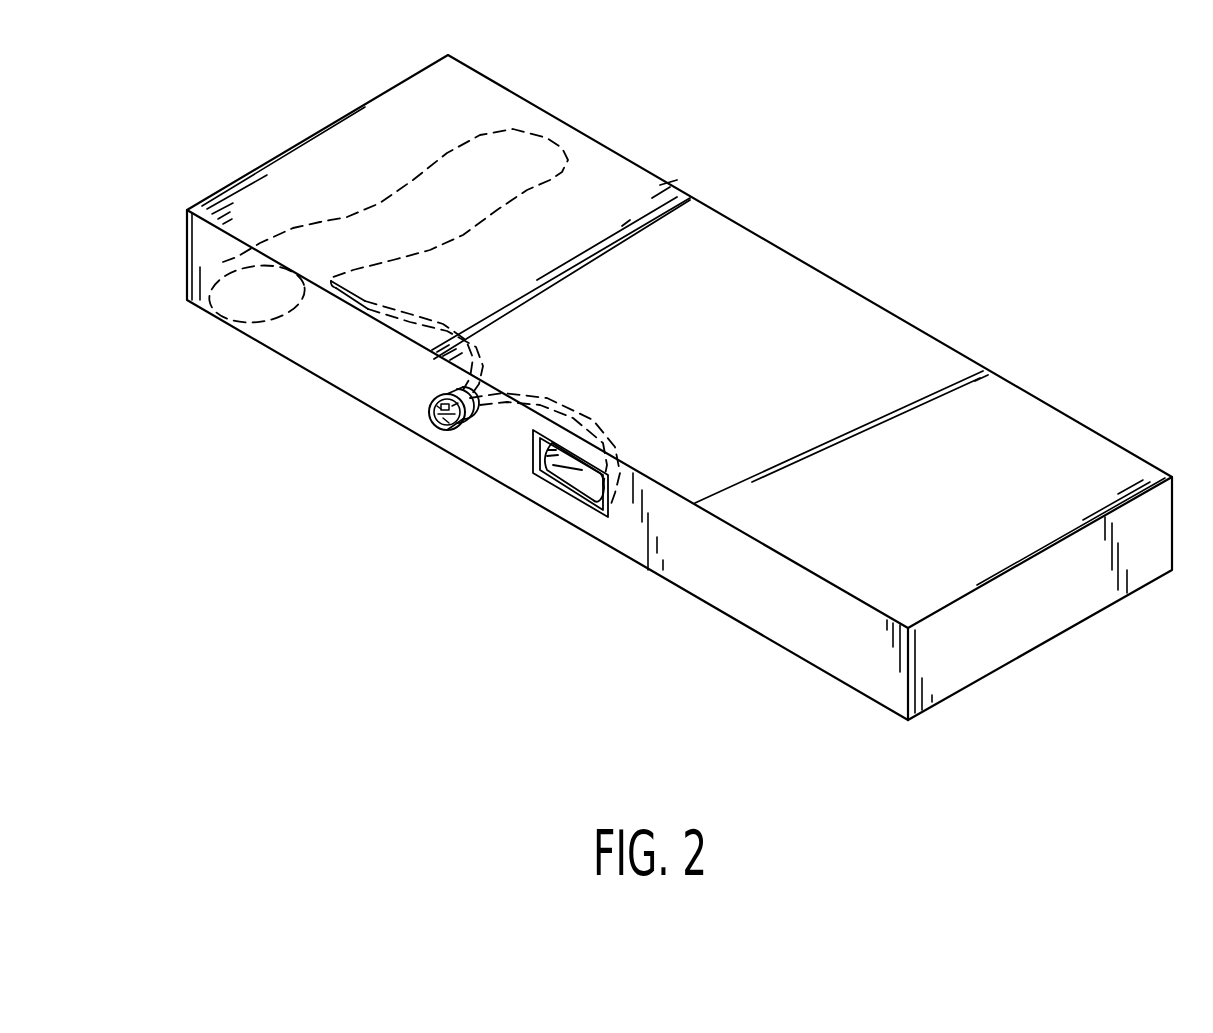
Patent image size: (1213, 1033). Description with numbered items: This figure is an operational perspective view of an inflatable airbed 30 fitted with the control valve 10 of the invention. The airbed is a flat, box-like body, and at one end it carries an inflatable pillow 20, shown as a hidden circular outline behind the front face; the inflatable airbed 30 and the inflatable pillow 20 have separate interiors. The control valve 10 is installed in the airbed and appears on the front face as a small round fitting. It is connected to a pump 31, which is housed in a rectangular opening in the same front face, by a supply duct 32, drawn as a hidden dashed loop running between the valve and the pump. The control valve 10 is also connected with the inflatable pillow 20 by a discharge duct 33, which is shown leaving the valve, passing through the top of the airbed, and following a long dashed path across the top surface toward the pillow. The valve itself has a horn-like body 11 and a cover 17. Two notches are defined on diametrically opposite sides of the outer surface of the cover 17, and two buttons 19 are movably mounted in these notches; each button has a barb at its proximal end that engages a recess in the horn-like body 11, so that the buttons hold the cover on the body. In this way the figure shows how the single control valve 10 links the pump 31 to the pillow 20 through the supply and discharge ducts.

The control valve 10 is at (437, 419).
The horn-like body 11 is at (440, 396).
The cover 17 is at (437, 425).
The buttons 19 is at (432, 405).
The inflatable pillow 20 is at (243, 313).
The inflatable airbed 30 is at (640, 545).
The pump 31 is at (573, 480).
The supply duct 32 is at (580, 408).
The discharge duct 33 is at (478, 342).